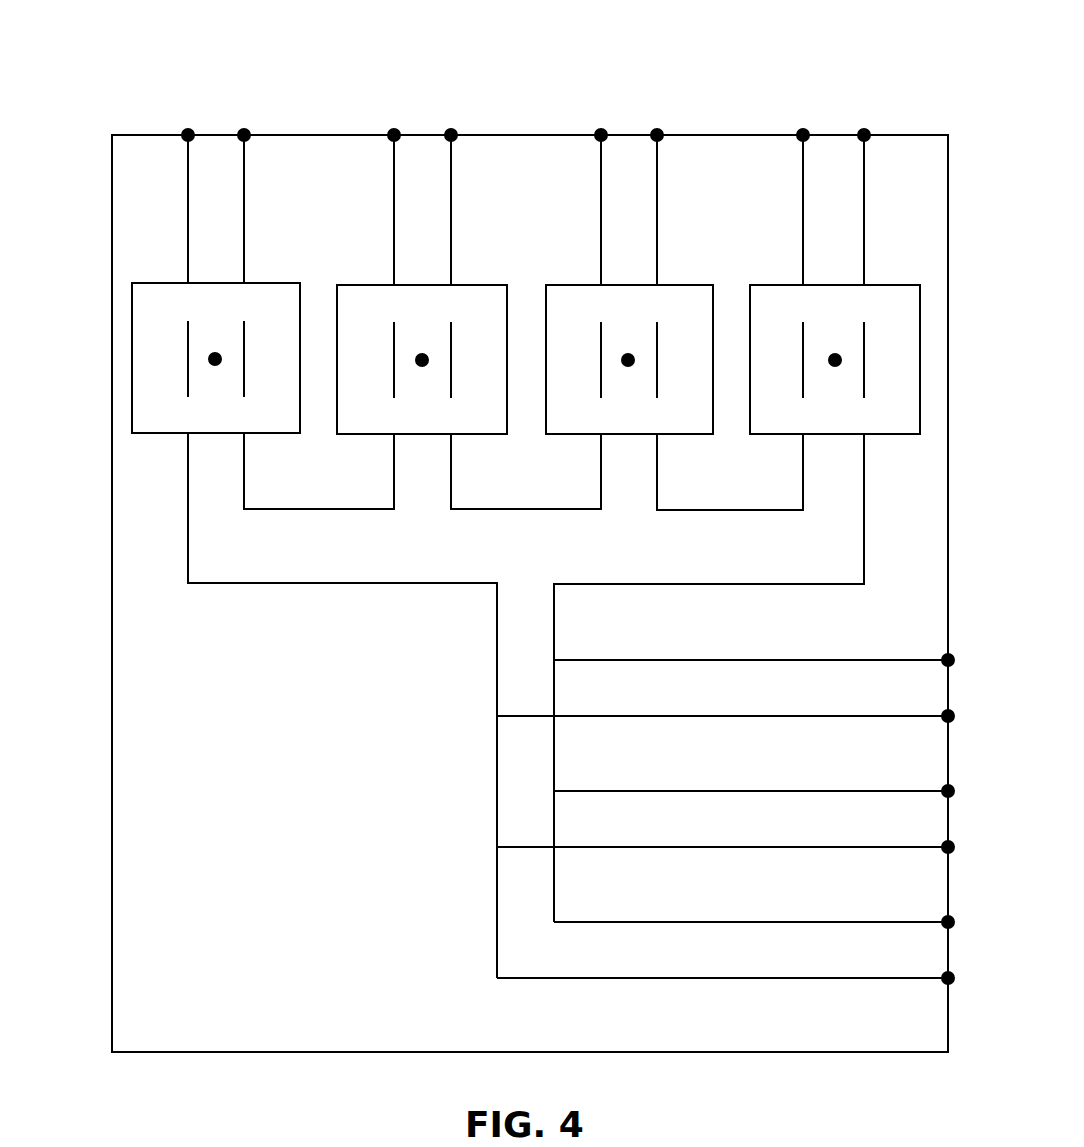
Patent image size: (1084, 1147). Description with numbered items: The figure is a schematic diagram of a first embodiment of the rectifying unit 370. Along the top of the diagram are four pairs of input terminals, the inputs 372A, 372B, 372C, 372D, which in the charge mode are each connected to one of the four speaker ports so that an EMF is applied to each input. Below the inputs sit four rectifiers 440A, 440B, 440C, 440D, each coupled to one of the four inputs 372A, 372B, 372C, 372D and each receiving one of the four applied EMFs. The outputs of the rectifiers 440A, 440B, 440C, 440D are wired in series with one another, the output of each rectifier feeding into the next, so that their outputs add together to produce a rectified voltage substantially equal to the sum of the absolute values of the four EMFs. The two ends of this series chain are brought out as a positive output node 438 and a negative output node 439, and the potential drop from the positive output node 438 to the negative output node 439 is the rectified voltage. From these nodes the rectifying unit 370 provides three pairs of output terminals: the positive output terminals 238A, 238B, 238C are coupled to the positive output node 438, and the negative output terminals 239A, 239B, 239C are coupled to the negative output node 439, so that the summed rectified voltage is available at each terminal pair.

The rectifying unit 370 is at (272, 52).
The input 372A is at (254, 108).
The input 372B is at (464, 108).
The input 372C is at (671, 108).
The input 372D is at (872, 108).
The rectifier 440A is at (172, 434).
The rectifier 440B is at (378, 434).
The rectifier 440C is at (576, 434).
The rectifier 440D is at (796, 435).
The positive output node 438 is at (555, 650).
The negative output node 439 is at (496, 693).
The positive output terminal 238A is at (884, 660).
The negative output terminal 239A is at (884, 716).
The positive output terminal 238B is at (884, 791).
The negative output terminal 239B is at (884, 847).
The positive output terminal 238C is at (884, 922).
The negative output terminal 239C is at (884, 978).